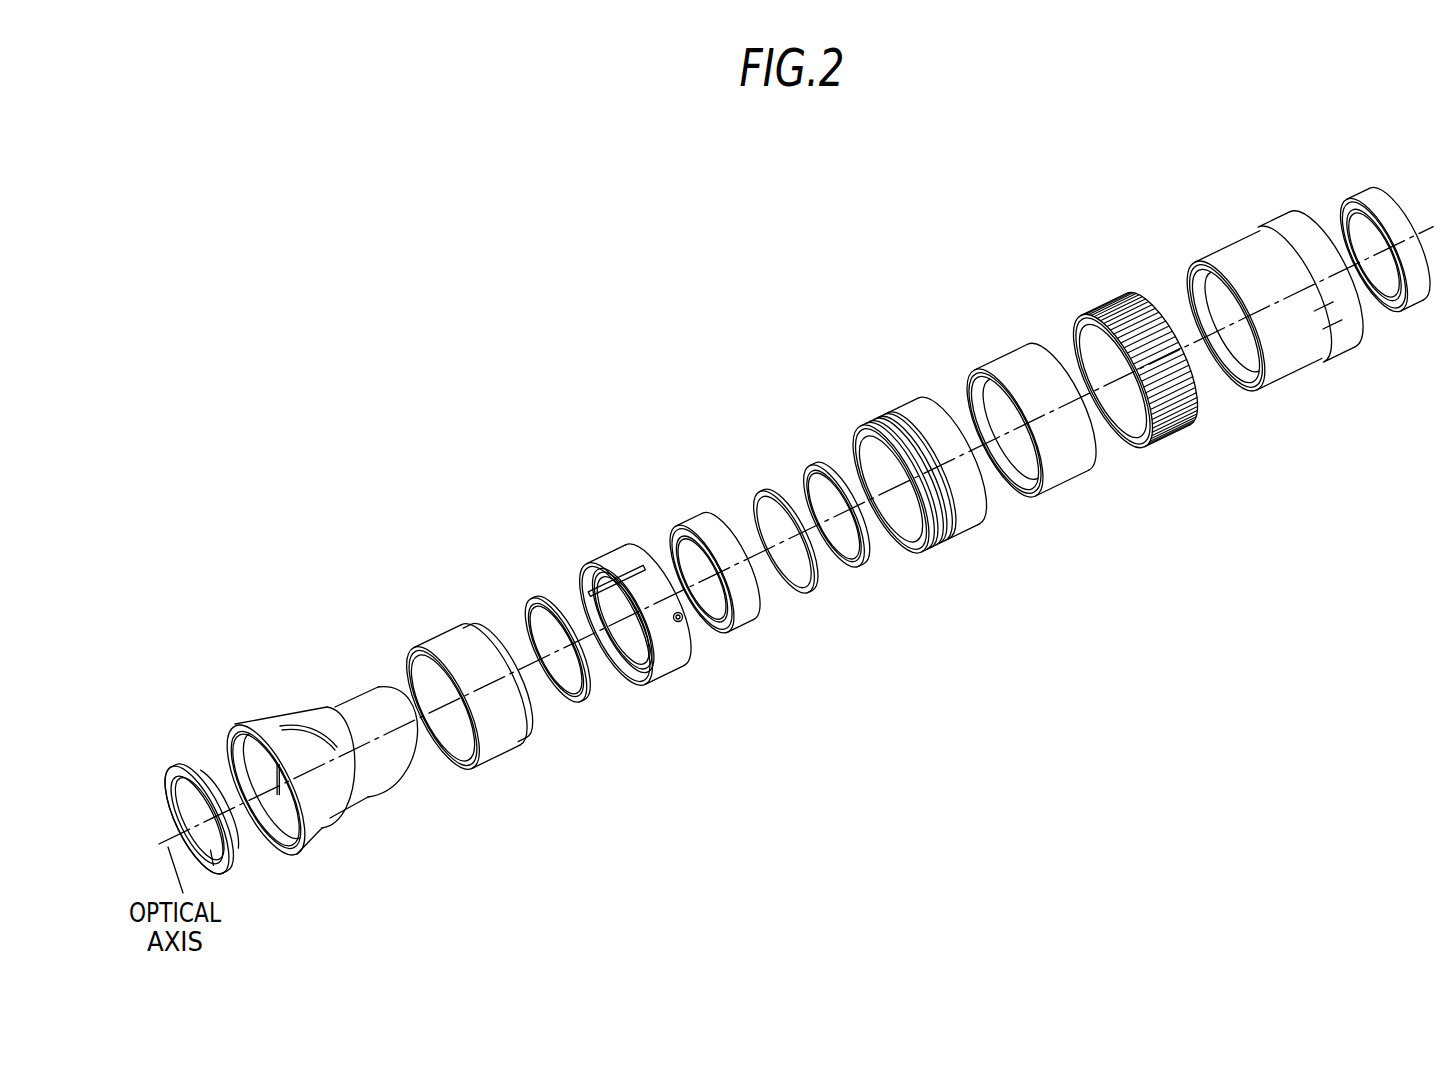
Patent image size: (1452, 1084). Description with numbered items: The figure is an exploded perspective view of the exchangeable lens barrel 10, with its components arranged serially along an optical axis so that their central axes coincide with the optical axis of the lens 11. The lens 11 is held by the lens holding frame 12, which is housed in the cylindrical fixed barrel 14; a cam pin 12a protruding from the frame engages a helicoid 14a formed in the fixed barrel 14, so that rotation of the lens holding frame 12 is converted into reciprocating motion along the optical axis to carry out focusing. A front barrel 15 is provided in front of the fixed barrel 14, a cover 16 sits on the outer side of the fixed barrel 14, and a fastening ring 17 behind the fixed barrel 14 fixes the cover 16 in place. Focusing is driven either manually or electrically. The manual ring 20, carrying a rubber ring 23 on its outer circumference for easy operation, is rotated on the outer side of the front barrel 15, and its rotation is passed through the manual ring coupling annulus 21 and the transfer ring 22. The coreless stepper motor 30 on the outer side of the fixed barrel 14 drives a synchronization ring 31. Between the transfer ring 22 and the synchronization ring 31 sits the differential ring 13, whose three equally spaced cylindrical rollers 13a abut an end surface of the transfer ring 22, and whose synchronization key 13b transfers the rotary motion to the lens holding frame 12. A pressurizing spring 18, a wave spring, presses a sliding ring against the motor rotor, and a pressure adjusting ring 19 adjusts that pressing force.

The exchangeable lens barrel 10 is at (717, 312).
The lens 11 is at (221, 878).
The lens holding frame 12 is at (240, 840).
The cam pin 12a is at (202, 775).
The differential ring 13 is at (637, 653).
The cylindrical roller 13a is at (682, 627).
The synchronization key 13b is at (600, 563).
The fixed barrel 14 is at (382, 764).
The helicoid 14a is at (309, 728).
The front barrel 15 is at (920, 415).
The cover 16 is at (1250, 272).
The fastening ring 17 is at (1357, 193).
The pressurizing spring 18 is at (765, 491).
The pressure adjusting ring 19 is at (873, 553).
The manual ring 20 is at (1065, 436).
The manual ring coupling annulus 21 is at (497, 717).
The transfer ring 22 is at (533, 598).
The rubber ring 23 is at (1132, 323).
The coreless stepper motor 30 is at (752, 613).
The synchronization ring 31 is at (683, 527).